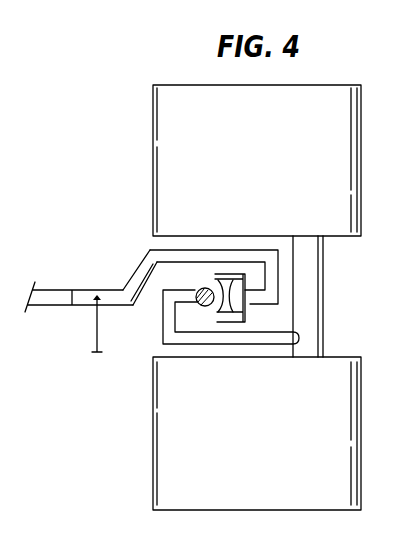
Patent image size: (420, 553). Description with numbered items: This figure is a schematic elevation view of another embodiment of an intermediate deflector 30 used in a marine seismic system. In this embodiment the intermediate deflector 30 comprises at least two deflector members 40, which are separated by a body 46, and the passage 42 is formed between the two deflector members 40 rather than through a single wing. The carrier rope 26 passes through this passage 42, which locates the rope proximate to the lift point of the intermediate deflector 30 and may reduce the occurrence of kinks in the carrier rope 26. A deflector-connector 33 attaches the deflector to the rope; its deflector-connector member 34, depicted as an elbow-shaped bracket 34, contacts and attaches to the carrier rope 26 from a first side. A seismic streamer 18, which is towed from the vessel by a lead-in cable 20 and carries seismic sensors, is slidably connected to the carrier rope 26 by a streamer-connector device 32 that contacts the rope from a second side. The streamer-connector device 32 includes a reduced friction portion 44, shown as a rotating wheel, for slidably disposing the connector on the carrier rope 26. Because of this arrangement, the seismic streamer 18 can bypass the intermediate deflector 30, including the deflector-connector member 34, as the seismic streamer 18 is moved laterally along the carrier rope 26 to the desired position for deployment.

The seismic streamer 18 is at (48, 289).
The lead-in cable 20 is at (90, 341).
The carrier rope 26 is at (202, 289).
The intermediate deflector 30 is at (129, 136).
The streamer-connector device 32 is at (239, 253).
The deflector-connector 33 is at (136, 331).
The deflector-connector member 34 is at (208, 337).
The deflector member 40 is at (245, 153).
The passage 42 is at (140, 237).
The reduced friction portion 44 is at (237, 303).
The body 46 is at (324, 298).